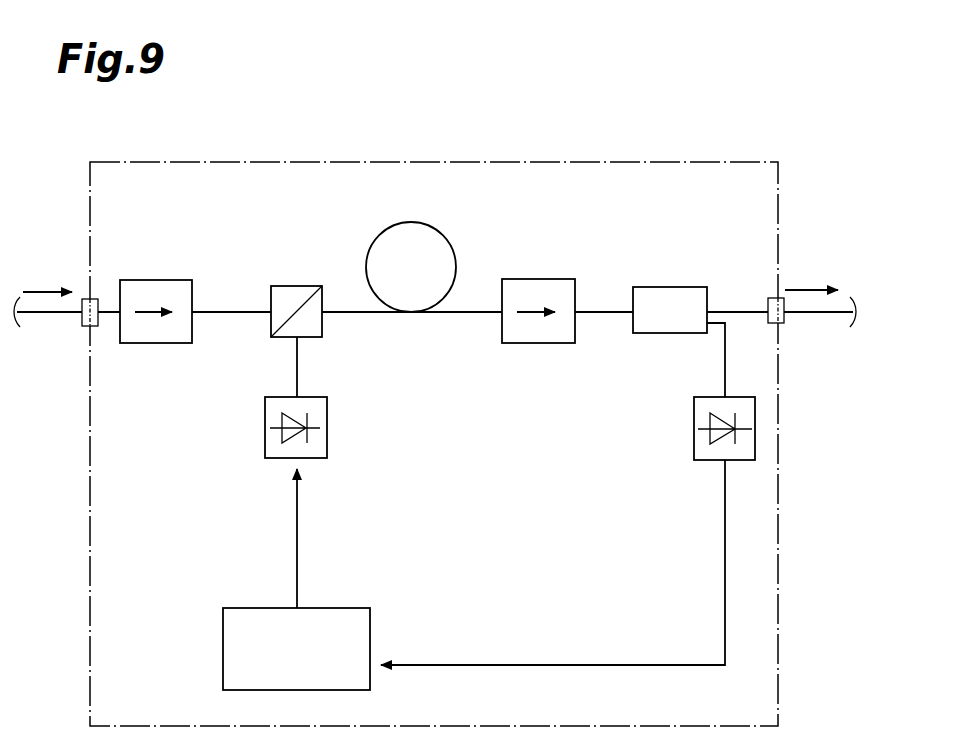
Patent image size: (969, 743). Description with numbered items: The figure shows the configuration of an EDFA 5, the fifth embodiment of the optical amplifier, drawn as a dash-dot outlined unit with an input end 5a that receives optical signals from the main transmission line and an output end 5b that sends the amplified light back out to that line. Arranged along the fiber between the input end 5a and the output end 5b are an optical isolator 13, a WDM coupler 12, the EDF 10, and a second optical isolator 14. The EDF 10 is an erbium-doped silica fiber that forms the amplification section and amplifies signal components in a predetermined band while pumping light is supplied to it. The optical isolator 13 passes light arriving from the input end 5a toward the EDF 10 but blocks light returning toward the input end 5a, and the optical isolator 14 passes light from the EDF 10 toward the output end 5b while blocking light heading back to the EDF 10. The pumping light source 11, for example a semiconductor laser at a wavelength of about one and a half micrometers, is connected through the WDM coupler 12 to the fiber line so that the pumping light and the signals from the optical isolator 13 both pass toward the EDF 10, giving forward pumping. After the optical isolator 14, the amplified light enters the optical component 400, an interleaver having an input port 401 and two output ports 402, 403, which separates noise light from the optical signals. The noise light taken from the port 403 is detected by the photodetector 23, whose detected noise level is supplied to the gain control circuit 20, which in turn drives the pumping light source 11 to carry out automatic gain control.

The EDFA 5 is at (786, 218).
The input end 5a is at (78, 323).
The output end 5b is at (785, 317).
The EDF 10 is at (449, 236).
The pumping light source 11 is at (328, 430).
The WDM coupler 12 is at (290, 286).
The optical isolator 13 is at (150, 280).
The optical isolator 14 is at (537, 279).
The gain control circuit 20 is at (335, 608).
The photodetector 23 is at (694, 430).
The optical component 400 is at (668, 287).
The input port 401 is at (633, 308).
The output port 402 is at (709, 310).
The output port 403 is at (715, 328).